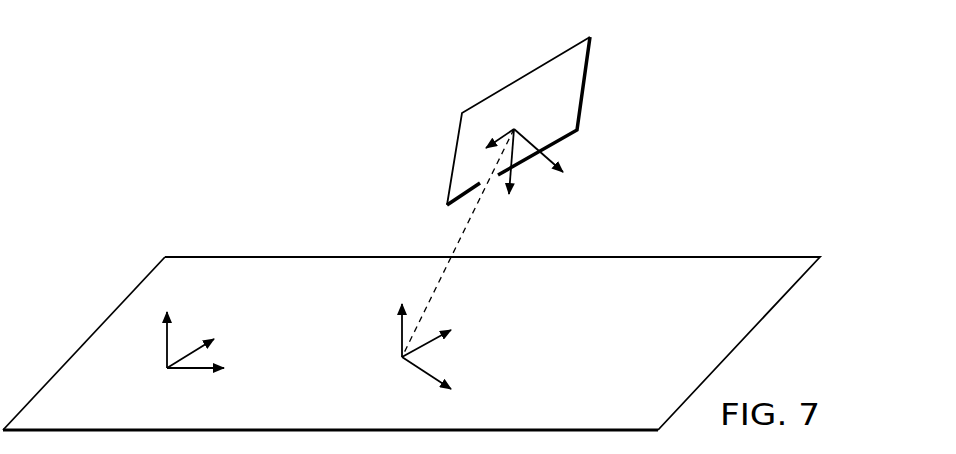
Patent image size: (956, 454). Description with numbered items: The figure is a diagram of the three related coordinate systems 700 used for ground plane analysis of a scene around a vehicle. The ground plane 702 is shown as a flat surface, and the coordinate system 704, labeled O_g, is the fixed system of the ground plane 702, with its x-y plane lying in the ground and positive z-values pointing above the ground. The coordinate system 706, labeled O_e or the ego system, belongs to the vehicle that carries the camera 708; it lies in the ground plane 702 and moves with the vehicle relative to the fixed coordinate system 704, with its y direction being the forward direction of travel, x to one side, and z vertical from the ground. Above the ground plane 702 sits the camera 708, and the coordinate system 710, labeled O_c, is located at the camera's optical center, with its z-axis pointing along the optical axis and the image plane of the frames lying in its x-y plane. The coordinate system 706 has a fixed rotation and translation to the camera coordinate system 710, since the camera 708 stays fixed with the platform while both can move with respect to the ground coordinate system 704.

The three related coordinate systems 700 is at (296, 99).
The ground plane 702 is at (307, 262).
The coordinate system 704 is at (188, 377).
The coordinate system 706 is at (422, 365).
The camera 708 is at (587, 82).
The coordinate system 710 is at (547, 153).